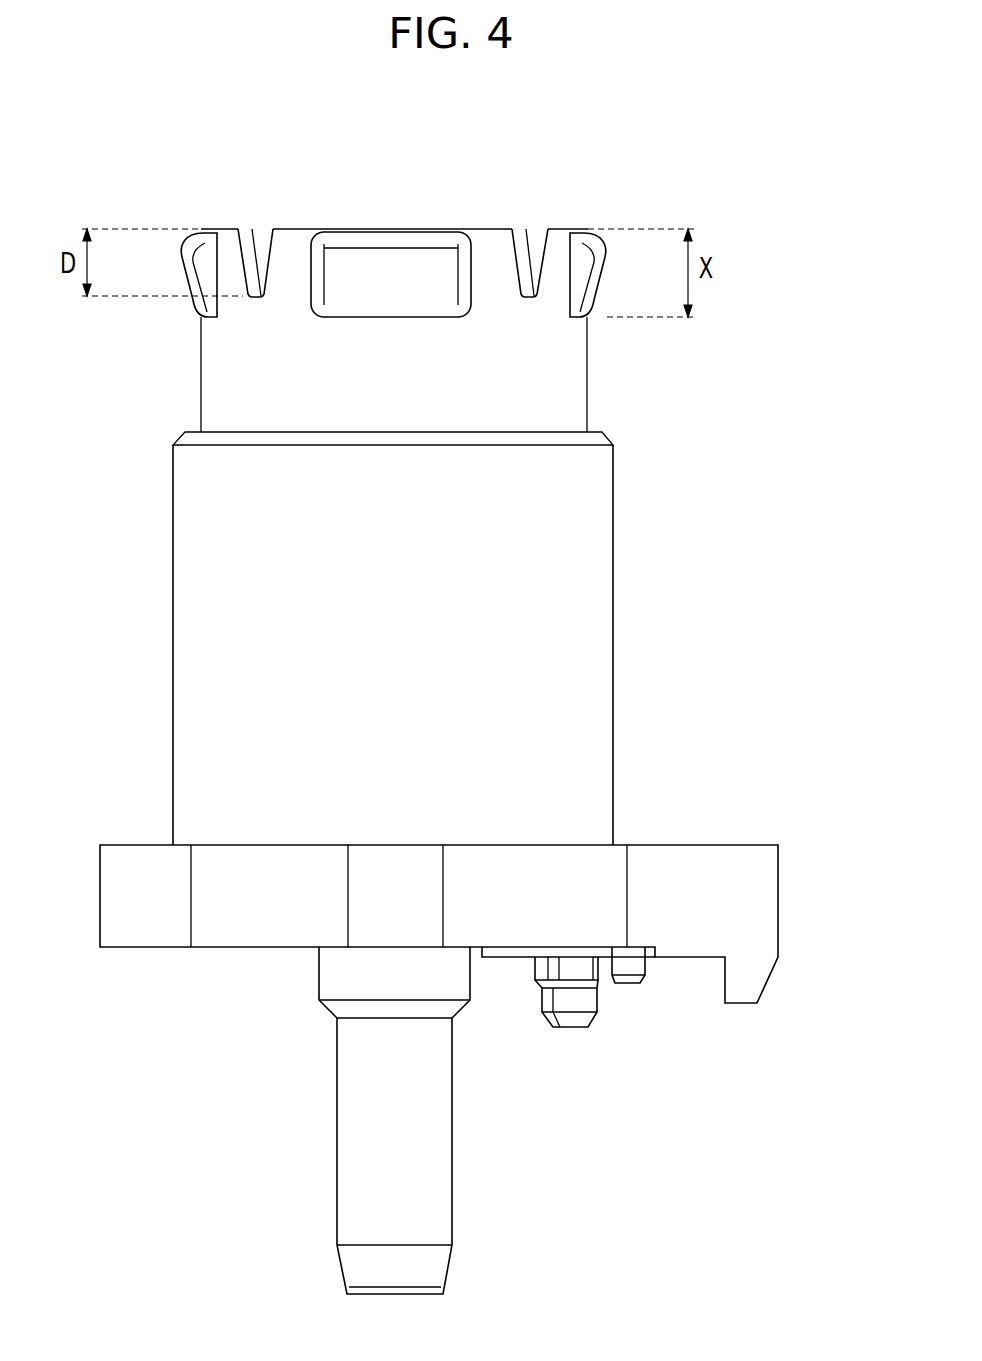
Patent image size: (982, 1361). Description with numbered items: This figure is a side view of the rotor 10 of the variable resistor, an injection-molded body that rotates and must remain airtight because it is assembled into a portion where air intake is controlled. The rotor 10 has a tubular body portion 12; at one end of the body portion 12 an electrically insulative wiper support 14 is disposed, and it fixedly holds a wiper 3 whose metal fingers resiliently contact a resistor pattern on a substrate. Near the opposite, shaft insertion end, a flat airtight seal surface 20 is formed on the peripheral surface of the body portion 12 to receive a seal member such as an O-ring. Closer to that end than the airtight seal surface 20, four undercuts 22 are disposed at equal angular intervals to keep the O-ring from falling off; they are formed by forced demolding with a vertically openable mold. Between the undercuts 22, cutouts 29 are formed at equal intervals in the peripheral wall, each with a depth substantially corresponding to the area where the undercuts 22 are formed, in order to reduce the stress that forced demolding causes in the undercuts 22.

The rotor 10 is at (732, 483).
The body portion 12 is at (588, 663).
The wiper support 14 is at (760, 898).
The airtight seal surface 20 is at (185, 432).
The undercuts 22 is at (203, 299).
The cutouts 29 is at (268, 251).
The wiper 3 is at (667, 962).